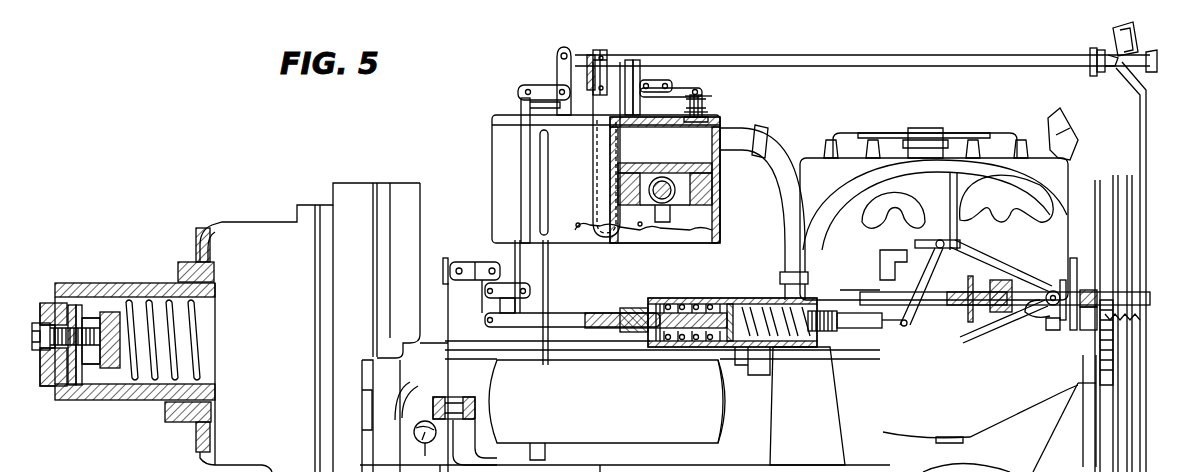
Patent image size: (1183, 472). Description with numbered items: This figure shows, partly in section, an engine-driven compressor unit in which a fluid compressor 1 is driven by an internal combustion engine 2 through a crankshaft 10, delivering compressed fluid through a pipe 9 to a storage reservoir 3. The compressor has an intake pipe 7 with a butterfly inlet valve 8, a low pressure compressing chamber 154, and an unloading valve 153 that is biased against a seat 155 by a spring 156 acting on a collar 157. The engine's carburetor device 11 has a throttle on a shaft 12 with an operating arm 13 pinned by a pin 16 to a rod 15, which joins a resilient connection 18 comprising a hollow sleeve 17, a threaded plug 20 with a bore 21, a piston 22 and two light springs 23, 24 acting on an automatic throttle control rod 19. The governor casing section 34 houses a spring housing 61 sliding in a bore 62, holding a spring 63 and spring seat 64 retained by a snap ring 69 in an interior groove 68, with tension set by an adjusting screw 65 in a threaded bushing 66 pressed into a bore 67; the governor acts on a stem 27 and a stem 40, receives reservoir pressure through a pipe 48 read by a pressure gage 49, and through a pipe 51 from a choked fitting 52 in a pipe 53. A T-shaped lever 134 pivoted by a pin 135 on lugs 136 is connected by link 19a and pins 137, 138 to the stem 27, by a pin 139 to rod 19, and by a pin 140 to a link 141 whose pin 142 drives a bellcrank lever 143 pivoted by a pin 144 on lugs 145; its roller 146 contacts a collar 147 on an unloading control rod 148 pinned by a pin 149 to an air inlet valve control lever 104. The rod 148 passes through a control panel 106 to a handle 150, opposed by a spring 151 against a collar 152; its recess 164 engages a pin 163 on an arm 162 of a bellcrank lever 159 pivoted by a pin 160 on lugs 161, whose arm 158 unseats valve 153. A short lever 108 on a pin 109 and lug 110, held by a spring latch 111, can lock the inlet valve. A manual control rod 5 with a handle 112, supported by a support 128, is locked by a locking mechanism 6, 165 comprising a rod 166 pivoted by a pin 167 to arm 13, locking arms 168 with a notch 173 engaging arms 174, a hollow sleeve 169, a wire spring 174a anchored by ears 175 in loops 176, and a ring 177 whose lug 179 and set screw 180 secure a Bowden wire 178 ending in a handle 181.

The fluid compressor 1 is at (485, 123).
The internal combustion engine 2 is at (790, 228).
The storage reservoir 3 is at (735, 422).
The manual control rod 5 is at (1126, 287).
The locking mechanism 6 is at (1045, 270).
The intake pipe 7 is at (593, 160).
The fluid controlling inlet valve 8 is at (548, 79).
The pipe 9 is at (549, 182).
The crankshaft 10 is at (752, 366).
The carburetor device 11 is at (925, 240).
The shaft 12 is at (925, 262).
The operating arm 13 is at (885, 252).
The rod 15 is at (870, 312).
The pin 16 is at (850, 320).
The hollow sleeve 17 is at (660, 304).
The resilient connection 18 is at (744, 292).
The automatic throttle control rod 19 is at (588, 320).
The link 19a is at (460, 262).
The threaded plug 20 is at (608, 325).
The bore 21 is at (640, 312).
The piston 22 is at (736, 304).
The spring 23 is at (702, 304).
The spring 24 is at (776, 300).
The stem 27 is at (178, 270).
The casing section 34 is at (197, 232).
The stem 40 is at (175, 420).
The pipe 48 is at (485, 445).
The pressure gage 49 is at (414, 438).
The pipe 51 is at (402, 366).
The choked fitting 52 is at (476, 410).
The pipe 53 is at (430, 398).
The spring housing 61 is at (125, 385).
The bore 62 is at (110, 370).
The spring 63 is at (160, 385).
The spring seat 64 is at (100, 320).
The adjusting screw 65 is at (40, 320).
The threaded bushing 66 is at (58, 378).
The bore 67 is at (48, 370).
The interior groove 68 is at (80, 386).
The snap ring 69 is at (72, 305).
The air inlet valve control lever 104 is at (592, 50).
The control panel 106 is at (1138, 140).
The short lever 108 is at (1118, 40).
The pin 109 is at (1090, 70).
The lug 110 is at (1088, 54).
The spring latch 111 is at (1130, 22).
The handle 112 is at (1110, 353).
The support 128 is at (1085, 385).
The T-shaped lever 134 is at (490, 302).
The pin 135 is at (500, 300).
The lugs 136 is at (485, 292).
The pin 137 is at (445, 258).
The pin 138 is at (490, 262).
The pin 139 is at (488, 310).
The pin 140 is at (525, 291).
The link 141 is at (575, 230).
The pin 142 is at (521, 100).
The bellcrank lever 143 is at (554, 81).
The pin 144 is at (526, 88).
The lugs 145 is at (520, 105).
The roller 146 is at (557, 48).
The collar 147 is at (560, 48).
The unloading control rod 148 is at (788, 55).
The pin 149 is at (598, 70).
The handle 150 is at (1130, 95).
The spring 151 is at (1110, 70).
The collar 152 is at (1100, 72).
The unloading valve 153 is at (722, 128).
The low pressure compressing chamber 154 is at (630, 140).
The seat 155 is at (710, 118).
The spring 156 is at (706, 112).
The collar 157 is at (706, 96).
The arm 158 is at (702, 92).
The bellcrank lever 159 is at (660, 70).
The pin 160 is at (670, 82).
The lugs 161 is at (668, 104).
The arm 162 is at (630, 60).
The pin 163 is at (638, 72).
The recess 164 is at (694, 60).
The locking mechanism 165 is at (960, 308).
The rod 166 is at (945, 312).
The pin 167 is at (885, 290).
The locking arms 168 is at (1002, 280).
The hollow sleeve 169 is at (1003, 320).
The notch 173 is at (1000, 262).
The arms 174 is at (960, 285).
The wire spring 174a is at (1010, 335).
The ears 175 is at (1074, 258).
The loops 176 is at (1062, 280).
The ring 177 is at (1113, 200).
The Bowden wire 178 is at (1085, 330).
The lug 179 is at (1050, 308).
The set screw 180 is at (1053, 332).
The handle 181 is at (1128, 418).